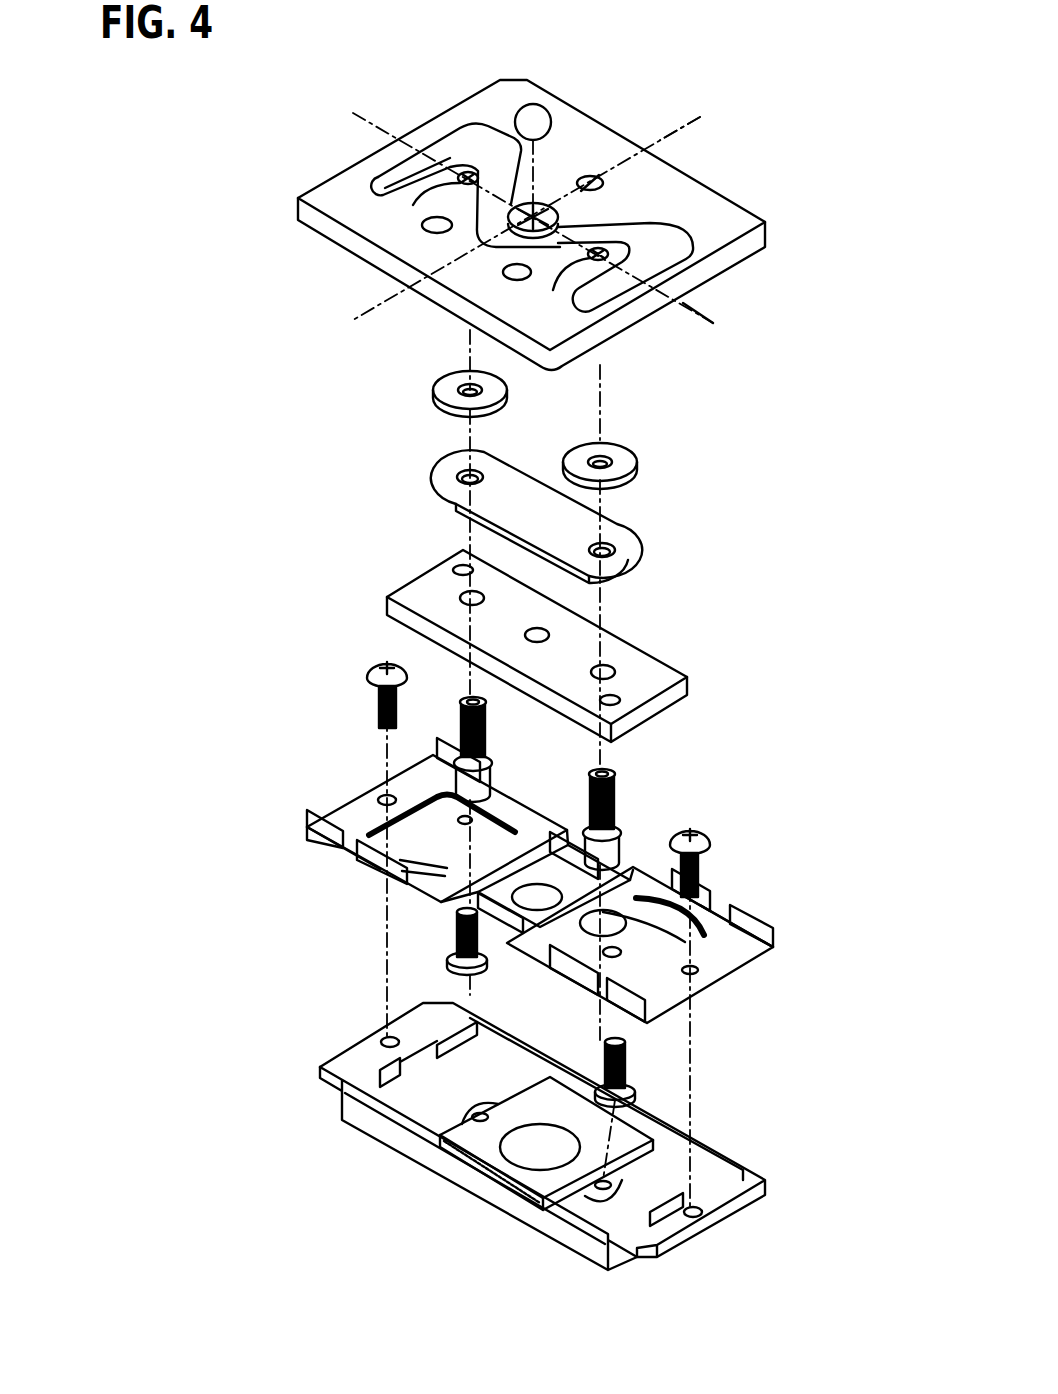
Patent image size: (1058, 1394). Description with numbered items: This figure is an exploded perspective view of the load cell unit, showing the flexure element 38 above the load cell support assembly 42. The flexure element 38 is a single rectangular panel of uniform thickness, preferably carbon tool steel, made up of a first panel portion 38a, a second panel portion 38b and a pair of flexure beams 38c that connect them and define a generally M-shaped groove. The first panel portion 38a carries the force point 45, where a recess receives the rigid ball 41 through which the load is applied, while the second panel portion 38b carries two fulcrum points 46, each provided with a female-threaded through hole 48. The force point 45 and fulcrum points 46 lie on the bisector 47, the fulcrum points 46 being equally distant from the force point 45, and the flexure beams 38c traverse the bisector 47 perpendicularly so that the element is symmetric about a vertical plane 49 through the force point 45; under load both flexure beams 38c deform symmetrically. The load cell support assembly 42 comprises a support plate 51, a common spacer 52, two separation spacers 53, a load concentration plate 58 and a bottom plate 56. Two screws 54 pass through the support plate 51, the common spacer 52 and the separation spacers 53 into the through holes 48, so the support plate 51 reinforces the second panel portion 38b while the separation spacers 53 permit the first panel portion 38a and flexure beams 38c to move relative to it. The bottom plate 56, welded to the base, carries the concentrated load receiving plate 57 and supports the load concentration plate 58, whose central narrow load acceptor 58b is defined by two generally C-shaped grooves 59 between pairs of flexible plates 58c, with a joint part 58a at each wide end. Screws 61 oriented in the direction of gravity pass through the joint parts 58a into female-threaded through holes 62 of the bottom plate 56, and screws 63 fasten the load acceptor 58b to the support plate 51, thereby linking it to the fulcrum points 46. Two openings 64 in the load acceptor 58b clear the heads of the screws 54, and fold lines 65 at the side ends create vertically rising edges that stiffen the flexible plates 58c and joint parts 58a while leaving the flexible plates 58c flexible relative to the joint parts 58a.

The flexure element 38 is at (524, 187).
The first panel portion 38a is at (713, 203).
The second panel portion 38b is at (323, 217).
The flexure beams 38c is at (717, 263).
The ball 41 is at (541, 108).
The load cell support assembly 42 is at (768, 677).
The force point 45 is at (537, 212).
The fulcrum points 46 is at (477, 254).
The bisector 47 is at (703, 313).
The through hole 48 is at (600, 249).
The vertical plane 49 is at (703, 113).
The support plate 51 is at (660, 672).
The common spacer 52 is at (632, 552).
The separation spacers 53 is at (625, 457).
The screws 54 is at (613, 773).
The bottom plate 56 is at (717, 1143).
The concentrated load receiving plate 57 is at (533, 1130).
The load concentration plate 58 is at (557, 902).
The joint part 58a is at (753, 970).
The load acceptor 58b is at (600, 858).
The flexible plates 58c is at (556, 975).
The C-shaped grooves 59 is at (760, 957).
The screws 61 is at (707, 843).
The through hole 62 is at (713, 1207).
The screws 63 is at (625, 1082).
The openings 64 is at (683, 980).
The fold lines 65 is at (637, 1017).